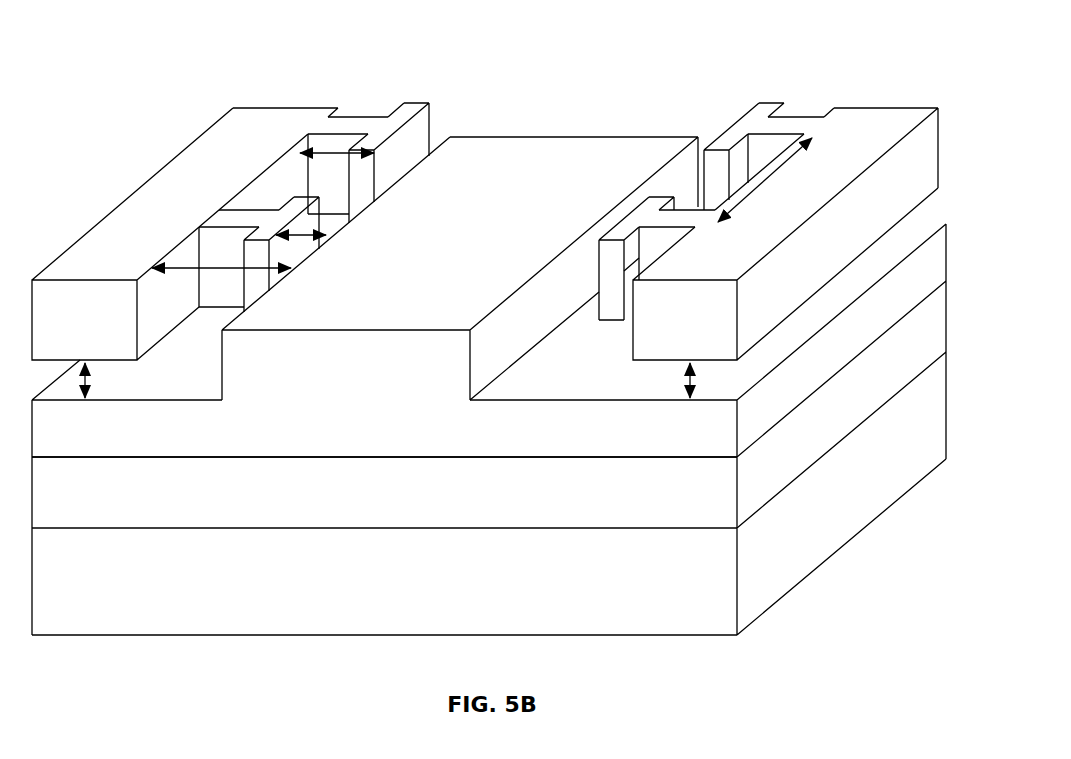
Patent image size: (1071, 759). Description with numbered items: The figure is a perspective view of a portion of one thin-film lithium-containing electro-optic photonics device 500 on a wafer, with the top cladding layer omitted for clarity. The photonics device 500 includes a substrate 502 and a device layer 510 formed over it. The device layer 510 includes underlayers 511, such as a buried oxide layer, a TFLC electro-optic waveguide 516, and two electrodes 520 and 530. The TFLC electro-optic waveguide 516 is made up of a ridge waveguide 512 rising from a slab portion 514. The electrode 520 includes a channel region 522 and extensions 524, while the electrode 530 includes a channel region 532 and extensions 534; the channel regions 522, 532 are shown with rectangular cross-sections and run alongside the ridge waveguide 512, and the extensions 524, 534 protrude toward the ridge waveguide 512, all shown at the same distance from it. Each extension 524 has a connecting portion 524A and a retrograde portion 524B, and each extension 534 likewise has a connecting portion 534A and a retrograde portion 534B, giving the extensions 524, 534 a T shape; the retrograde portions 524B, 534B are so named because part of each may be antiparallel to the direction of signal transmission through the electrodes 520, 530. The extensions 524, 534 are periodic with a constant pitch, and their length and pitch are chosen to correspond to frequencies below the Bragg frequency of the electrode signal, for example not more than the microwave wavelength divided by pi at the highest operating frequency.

The photonics device 500 is at (470, 29).
The substrate 502 is at (543, 593).
The underlayers 511 is at (543, 504).
The ridge waveguide 512 is at (409, 400).
The slab portion 514 is at (88, 485).
The TFLC electro-optic waveguide 516 is at (489, 400).
The device layer 510 is at (212, 70).
The electrode 520 is at (848, 95).
The channel region 522 is at (668, 331).
The extensions 524 is at (797, 100).
The connecting portion 524A is at (777, 120).
The retrograde portion 524B is at (712, 132).
The electrode 530 is at (107, 192).
The channel region 532 is at (68, 331).
The extensions 534 is at (365, 95).
The connecting portion 534A is at (335, 112).
The retrograde portion 534B is at (434, 121).